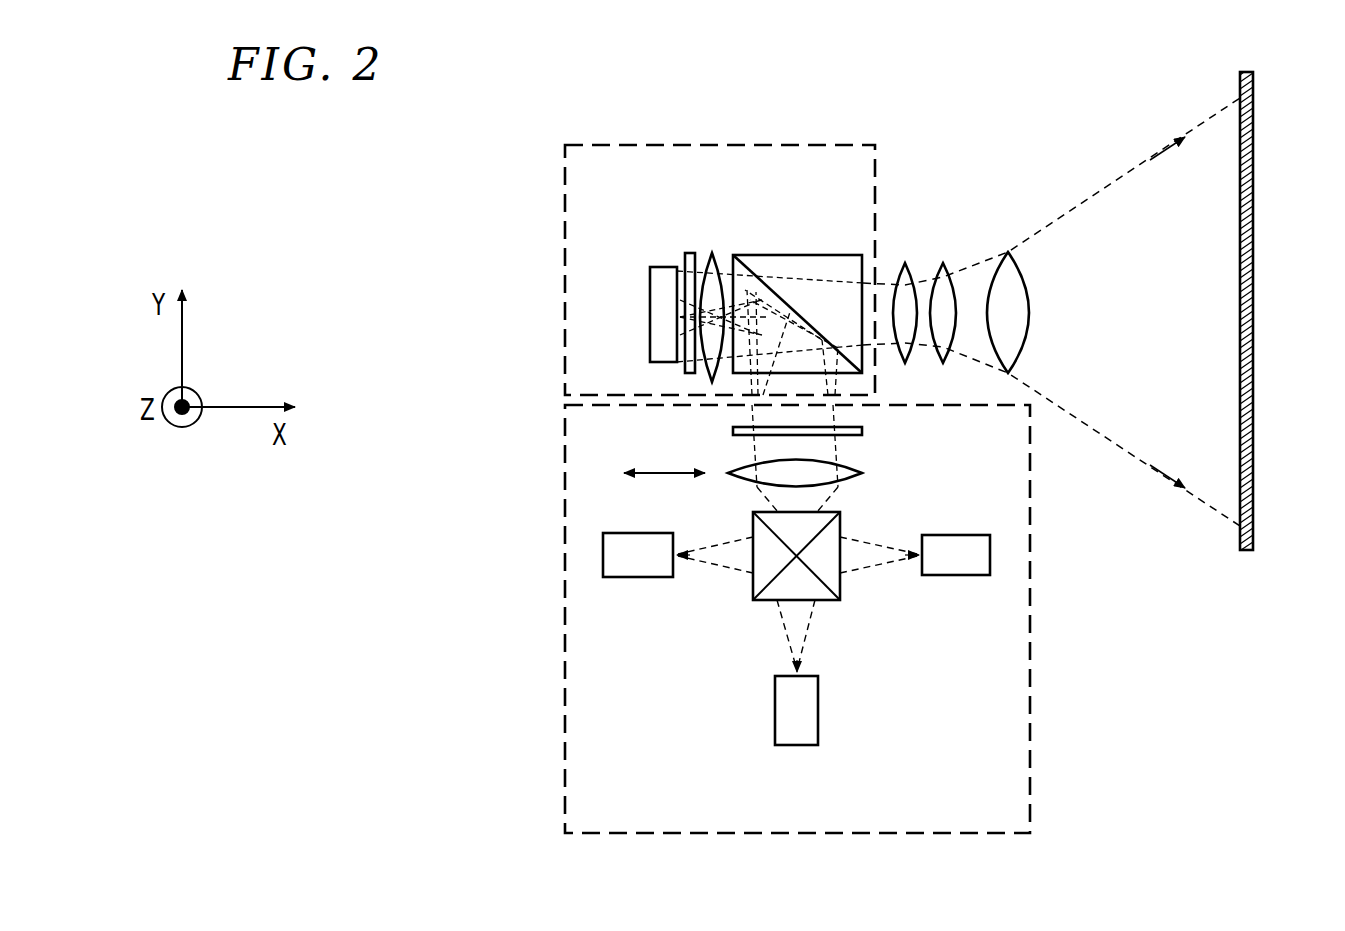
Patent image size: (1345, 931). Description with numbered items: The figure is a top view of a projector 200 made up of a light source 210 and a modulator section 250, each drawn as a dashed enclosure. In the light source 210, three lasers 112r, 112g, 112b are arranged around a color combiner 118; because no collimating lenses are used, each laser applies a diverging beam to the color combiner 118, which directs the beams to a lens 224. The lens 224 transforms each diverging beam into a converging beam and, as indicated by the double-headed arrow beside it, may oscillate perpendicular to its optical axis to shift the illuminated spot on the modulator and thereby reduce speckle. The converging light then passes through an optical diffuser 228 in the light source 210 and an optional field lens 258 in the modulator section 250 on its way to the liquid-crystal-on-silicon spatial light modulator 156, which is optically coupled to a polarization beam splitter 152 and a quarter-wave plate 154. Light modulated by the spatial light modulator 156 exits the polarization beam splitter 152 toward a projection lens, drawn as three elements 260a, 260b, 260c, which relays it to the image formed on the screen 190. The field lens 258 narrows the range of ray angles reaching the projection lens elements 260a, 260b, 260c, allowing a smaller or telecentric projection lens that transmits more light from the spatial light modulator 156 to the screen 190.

The projector 200 is at (322, 134).
The modulator section 250 is at (565, 232).
The light source 210 is at (565, 535).
The liquid-crystal-on-silicon spatial light modulator 156 is at (650, 318).
The quarter-wave plate 154 is at (688, 369).
The field lens 258 is at (712, 252).
The polarization beam splitter 152 is at (840, 255).
The projection lens element 260a is at (905, 262).
The projection lens element 260b is at (943, 262).
The projection lens element 260c is at (1028, 313).
The screen 190 is at (1253, 152).
The optical diffuser 228 is at (866, 432).
The lens 224 is at (866, 472).
The color combiner 118 is at (855, 620).
The green laser 112g is at (638, 578).
The red laser 112r is at (956, 576).
The blue laser 112b is at (797, 746).